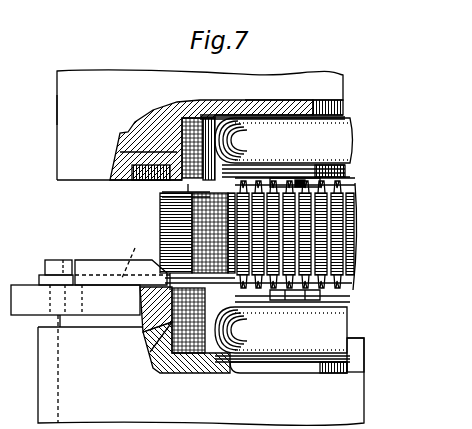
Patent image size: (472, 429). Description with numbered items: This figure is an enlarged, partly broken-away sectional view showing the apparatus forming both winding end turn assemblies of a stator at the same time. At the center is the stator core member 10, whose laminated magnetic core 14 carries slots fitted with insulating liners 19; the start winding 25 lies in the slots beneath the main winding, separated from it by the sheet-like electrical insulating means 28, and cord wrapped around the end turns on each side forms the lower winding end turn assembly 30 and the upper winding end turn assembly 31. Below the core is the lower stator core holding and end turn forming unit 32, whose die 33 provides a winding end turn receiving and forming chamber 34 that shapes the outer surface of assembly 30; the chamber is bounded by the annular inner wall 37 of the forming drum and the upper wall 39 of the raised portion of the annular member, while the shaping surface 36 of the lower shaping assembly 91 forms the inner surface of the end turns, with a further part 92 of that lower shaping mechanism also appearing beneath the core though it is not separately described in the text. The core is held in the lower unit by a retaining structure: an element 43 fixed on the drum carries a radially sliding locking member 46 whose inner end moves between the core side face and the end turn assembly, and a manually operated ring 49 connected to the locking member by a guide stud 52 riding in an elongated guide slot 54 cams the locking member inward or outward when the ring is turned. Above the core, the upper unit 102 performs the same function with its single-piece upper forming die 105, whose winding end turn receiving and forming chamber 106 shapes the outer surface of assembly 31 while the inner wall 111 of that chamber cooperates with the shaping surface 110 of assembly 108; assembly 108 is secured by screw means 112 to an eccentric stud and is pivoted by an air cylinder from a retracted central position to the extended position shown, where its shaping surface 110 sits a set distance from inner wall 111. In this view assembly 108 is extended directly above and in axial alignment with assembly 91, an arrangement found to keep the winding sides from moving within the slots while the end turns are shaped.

The stator core member 10 is at (172, 213).
The laminated magnetic core 14 is at (177, 226).
The insulating liner 19 is at (188, 188).
The start winding 25 is at (200, 125).
The electrical insulating means 28 is at (197, 115).
The winding end turn assembly 30 is at (192, 322).
The winding end turn assembly 31 is at (180, 130).
The lower stator core holding and end turn forming unit 32 is at (38, 368).
The die 33 is at (100, 322).
The winding end turn receiving and forming chamber 34 is at (178, 292).
The shaping surface 36 is at (230, 330).
The annular inner wall 37 is at (175, 323).
The upper wall 39 is at (166, 328).
The element 43 is at (95, 259).
The locking member 46 is at (134, 255).
The ring 49 is at (18, 285).
The guide stud 52 is at (57, 260).
The guide slot 54 is at (50, 295).
The assembly 91 is at (334, 325).
The lower winding end 92 is at (296, 296).
The upper unit 102 is at (57, 112).
The upper forming die 105 is at (70, 133).
The winding end turn receiving and forming chamber 106 is at (133, 168).
The assembly 108 is at (311, 146).
The shaping surface 110 is at (233, 136).
The inner wall 111 is at (120, 152).
The screw means 112 is at (297, 181).